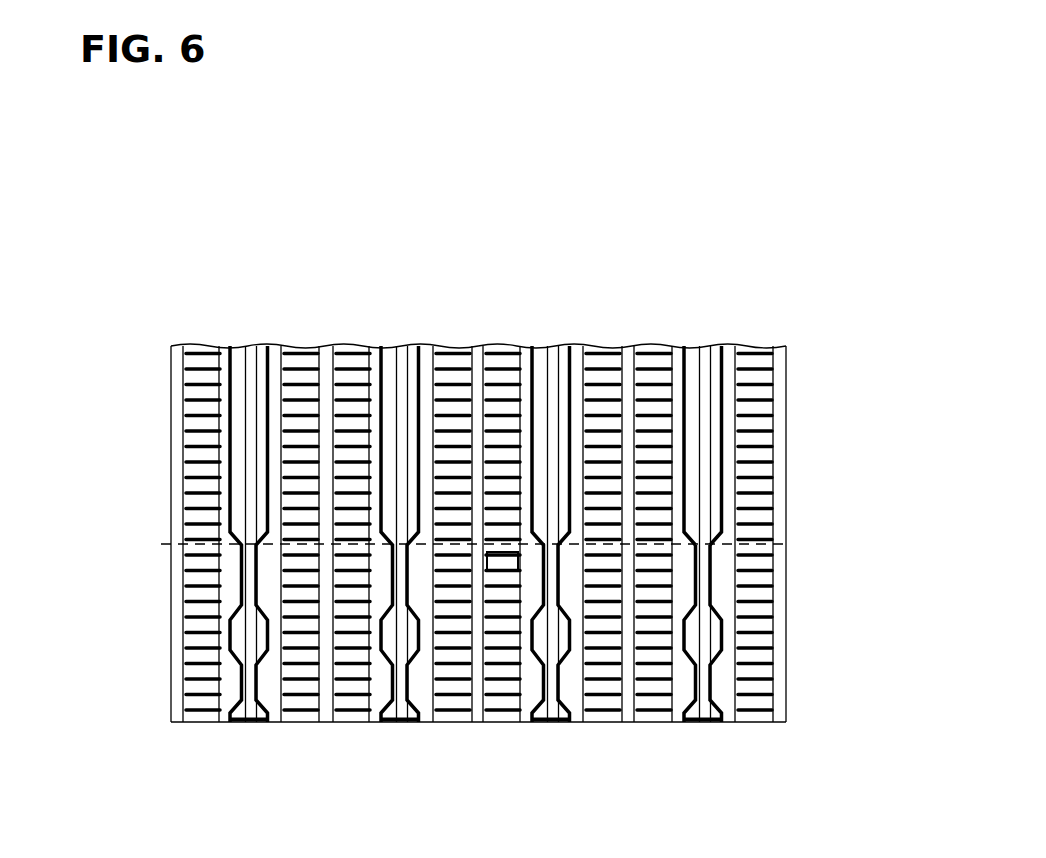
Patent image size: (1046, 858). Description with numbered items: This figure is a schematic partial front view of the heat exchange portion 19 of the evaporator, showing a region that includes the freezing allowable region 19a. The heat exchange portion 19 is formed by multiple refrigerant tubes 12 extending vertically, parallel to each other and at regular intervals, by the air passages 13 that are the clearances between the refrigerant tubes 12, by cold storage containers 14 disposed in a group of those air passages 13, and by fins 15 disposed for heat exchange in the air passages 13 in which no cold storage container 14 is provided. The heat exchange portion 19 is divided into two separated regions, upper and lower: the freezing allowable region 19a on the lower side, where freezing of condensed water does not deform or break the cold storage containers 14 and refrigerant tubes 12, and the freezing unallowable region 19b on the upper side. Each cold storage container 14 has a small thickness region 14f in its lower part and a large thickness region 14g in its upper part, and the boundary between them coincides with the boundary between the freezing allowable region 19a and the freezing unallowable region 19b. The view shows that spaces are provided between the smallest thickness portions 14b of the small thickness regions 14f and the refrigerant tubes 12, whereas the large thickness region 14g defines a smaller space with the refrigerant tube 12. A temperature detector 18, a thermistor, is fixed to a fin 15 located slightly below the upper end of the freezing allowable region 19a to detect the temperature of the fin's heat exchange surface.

The refrigerant tube 12 is at (628, 350).
The air passage 13 is at (495, 351).
The cold storage container 14 is at (712, 353).
The large thickness region 14g is at (717, 438).
The smallest thickness portion 14b is at (705, 575).
The small thickness region 14f is at (713, 632).
The fin 15 is at (588, 362).
The temperature detector 18 is at (501, 562).
The heat exchange portion 19 is at (299, 348).
The freezing allowable region 19a is at (157, 544).
The freezing unallowable region 19b is at (157, 544).